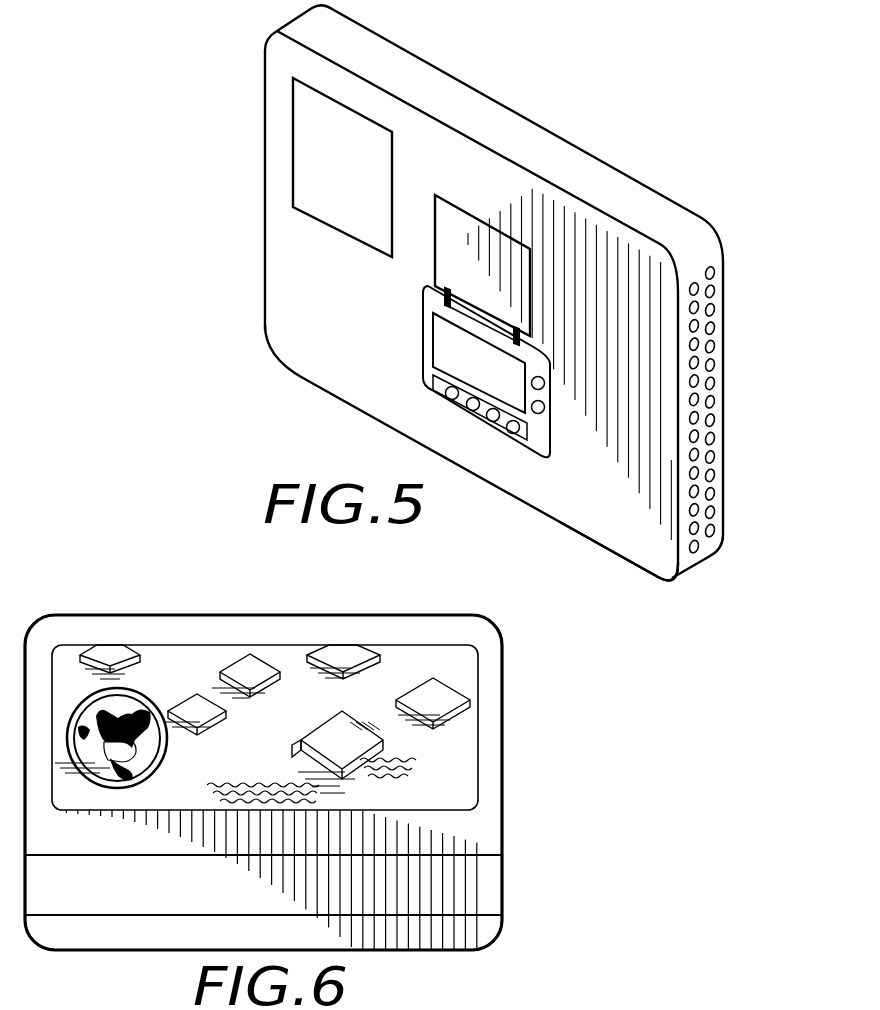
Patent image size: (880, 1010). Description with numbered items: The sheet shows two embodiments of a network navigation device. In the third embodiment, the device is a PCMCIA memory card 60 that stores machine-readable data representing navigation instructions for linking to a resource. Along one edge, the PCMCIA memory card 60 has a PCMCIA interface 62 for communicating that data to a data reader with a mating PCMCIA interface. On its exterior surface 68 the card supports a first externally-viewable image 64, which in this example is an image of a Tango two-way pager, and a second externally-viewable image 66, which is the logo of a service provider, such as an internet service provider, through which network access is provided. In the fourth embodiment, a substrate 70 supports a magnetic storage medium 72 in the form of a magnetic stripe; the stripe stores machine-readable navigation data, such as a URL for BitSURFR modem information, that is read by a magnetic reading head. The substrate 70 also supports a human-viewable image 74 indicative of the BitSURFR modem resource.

In FIG. 5, the PCMCIA memory card 60 is at (703, 220).
In FIG. 5, the PCMCIA interface 62 is at (712, 347).
In FIG. 5, the first externally-viewable image 64 is at (490, 222).
In FIG. 5, the second externally-viewable image 66 is at (330, 100).
In FIG. 5, the exterior surface 68 is at (650, 547).
In FIG. 6, the substrate 70 is at (503, 677).
In FIG. 6, the magnetic storage medium 72 is at (503, 887).
In FIG. 6, the human-viewable image 74 is at (480, 755).